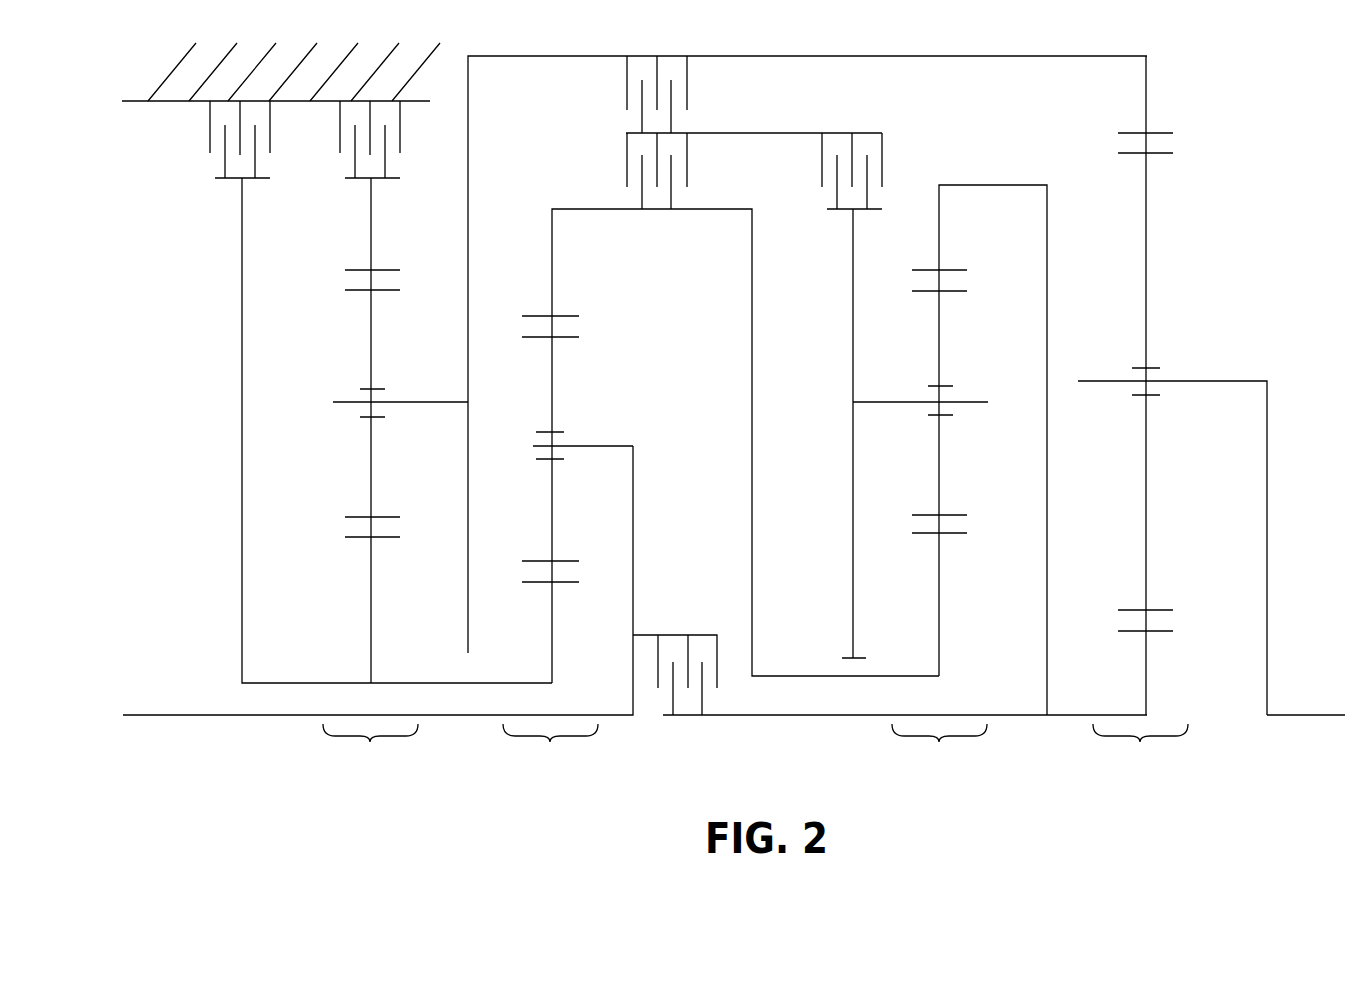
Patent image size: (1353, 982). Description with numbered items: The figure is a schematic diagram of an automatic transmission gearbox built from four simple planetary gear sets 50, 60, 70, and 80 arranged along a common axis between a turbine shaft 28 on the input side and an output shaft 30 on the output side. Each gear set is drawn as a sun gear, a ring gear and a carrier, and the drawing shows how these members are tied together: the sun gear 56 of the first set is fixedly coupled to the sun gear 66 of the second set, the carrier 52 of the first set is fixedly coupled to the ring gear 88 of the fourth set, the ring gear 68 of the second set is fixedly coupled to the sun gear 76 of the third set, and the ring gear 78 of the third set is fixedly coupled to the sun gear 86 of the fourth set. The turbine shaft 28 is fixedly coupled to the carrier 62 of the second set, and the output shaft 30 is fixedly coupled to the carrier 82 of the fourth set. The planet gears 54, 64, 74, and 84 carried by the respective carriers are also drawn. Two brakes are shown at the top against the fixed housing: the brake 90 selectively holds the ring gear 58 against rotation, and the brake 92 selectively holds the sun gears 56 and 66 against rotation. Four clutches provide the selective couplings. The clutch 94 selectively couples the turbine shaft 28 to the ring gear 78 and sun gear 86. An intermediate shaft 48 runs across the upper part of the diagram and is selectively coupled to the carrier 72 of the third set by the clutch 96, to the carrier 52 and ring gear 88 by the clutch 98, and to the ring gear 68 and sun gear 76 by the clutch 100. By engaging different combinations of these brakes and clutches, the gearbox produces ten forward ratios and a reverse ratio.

The turbine shaft 28 is at (233, 715).
The output shaft 30 is at (1305, 715).
The intermediate shaft 48 is at (738, 133).
The planetary gear set 50 is at (370, 750).
The carrier 52 is at (467, 222).
The planet gears and carrier of first planetary gear set 54 is at (372, 357).
The sun gear 56 is at (372, 602).
The ring gear 58 is at (371, 202).
The planetary gear set 60 is at (550, 751).
The carrier 62 is at (633, 535).
The planet gears and carrier of second planetary gear set 64 is at (552, 402).
The sun gear 66 is at (552, 645).
The ring gear 68 is at (552, 250).
The planetary gear set 70 is at (939, 751).
The carrier 72 is at (853, 313).
The planet gears and carrier of third planetary gear set 74 is at (939, 356).
The sun gear 76 is at (939, 600).
The ring gear 78 is at (939, 203).
The planetary gear set 80 is at (1140, 751).
The carrier 82 is at (1267, 548).
The planet gears and carrier of fourth planetary gear set 84 is at (1146, 220).
The sun gear 86 is at (1146, 695).
The ring gear 88 is at (1146, 68).
The brake 90 is at (340, 148).
The brake 92 is at (210, 148).
The clutch 94 is at (650, 635).
The clutch 96 is at (882, 147).
The clutch 98 is at (627, 72).
The clutch 100 is at (627, 172).